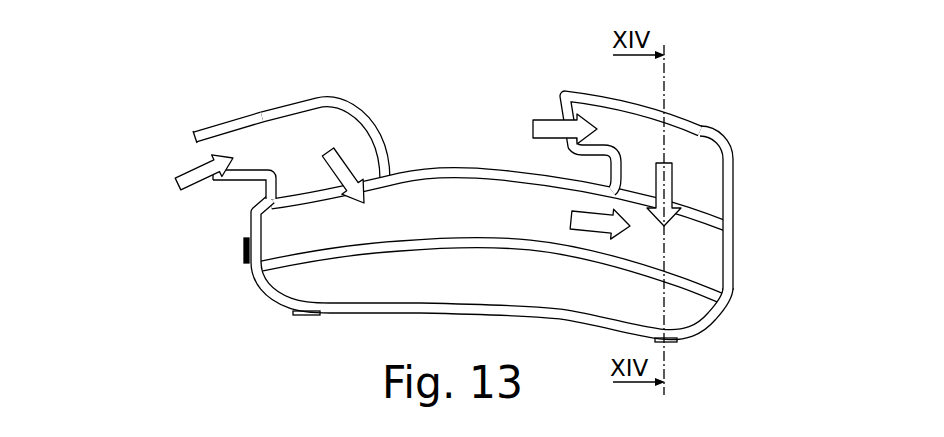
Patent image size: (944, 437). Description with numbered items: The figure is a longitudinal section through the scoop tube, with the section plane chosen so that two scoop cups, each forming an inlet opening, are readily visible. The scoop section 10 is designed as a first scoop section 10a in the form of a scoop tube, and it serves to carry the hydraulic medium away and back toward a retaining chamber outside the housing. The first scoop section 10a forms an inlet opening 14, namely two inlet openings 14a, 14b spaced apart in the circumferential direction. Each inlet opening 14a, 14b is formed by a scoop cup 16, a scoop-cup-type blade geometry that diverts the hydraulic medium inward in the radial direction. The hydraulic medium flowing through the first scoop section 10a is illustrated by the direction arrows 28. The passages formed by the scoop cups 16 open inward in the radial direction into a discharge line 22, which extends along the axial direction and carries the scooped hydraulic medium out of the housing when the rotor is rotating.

The scoop section 10 is at (451, 174).
The first scoop section 10a is at (451, 174).
The inlet opening 14 is at (393, 144).
The first inlet opening 14a is at (208, 186).
The second inlet opening 14b is at (550, 110).
The scoop cup 16 is at (287, 135).
The discharge line 22 is at (710, 262).
The direction arrows 28 is at (180, 178).